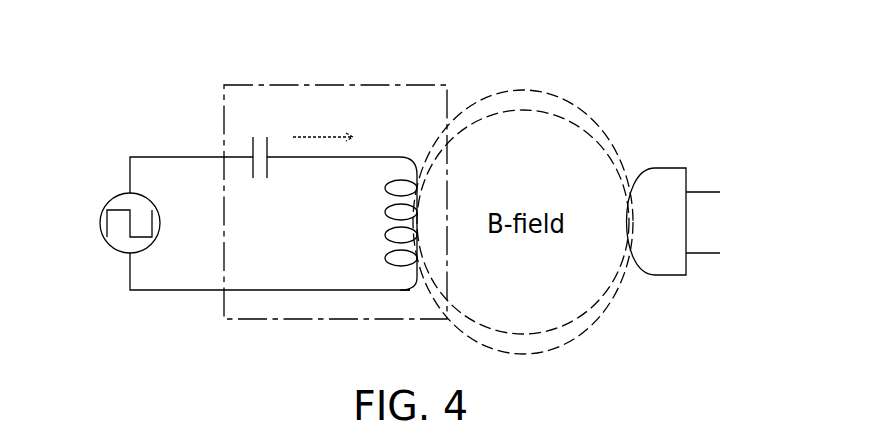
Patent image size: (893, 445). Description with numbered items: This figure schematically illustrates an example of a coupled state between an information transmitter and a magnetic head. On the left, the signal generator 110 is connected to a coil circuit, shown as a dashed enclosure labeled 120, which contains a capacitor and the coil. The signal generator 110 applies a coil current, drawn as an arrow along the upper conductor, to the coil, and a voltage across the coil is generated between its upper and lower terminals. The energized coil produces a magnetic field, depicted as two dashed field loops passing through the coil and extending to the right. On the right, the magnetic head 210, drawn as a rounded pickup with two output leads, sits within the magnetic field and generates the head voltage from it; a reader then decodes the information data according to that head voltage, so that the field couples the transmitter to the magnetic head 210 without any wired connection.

The signal generator 110 is at (108, 200).
The coil assembly 120 is at (362, 85).
The magnetic head 210 is at (663, 168).